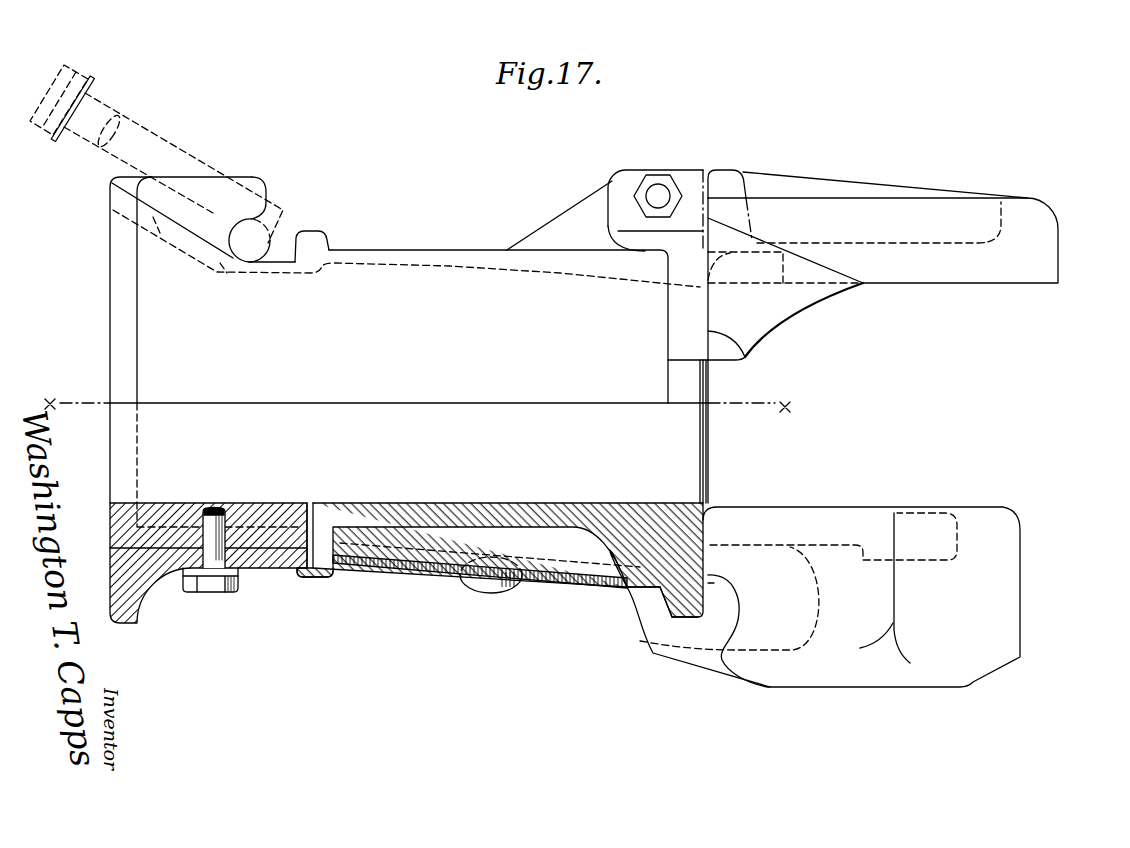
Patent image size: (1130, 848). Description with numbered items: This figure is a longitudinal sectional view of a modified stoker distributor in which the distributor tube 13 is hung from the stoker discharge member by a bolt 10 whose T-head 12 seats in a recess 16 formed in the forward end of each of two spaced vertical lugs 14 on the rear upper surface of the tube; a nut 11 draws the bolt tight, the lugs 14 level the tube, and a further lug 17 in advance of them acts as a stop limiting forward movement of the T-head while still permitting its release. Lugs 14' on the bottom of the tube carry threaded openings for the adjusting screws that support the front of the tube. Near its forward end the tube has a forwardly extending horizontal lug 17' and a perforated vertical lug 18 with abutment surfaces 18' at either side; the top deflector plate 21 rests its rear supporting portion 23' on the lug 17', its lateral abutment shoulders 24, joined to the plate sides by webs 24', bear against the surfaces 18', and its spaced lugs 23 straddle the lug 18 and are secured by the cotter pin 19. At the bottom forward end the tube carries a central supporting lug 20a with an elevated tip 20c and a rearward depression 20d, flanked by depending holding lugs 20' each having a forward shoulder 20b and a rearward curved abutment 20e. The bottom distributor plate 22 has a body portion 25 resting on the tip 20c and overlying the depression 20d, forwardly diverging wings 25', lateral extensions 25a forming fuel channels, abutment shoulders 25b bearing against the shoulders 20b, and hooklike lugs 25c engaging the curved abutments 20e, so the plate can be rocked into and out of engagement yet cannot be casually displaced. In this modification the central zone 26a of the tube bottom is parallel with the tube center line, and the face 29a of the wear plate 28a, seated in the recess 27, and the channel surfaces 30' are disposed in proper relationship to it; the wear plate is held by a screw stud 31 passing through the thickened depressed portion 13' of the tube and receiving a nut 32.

The bolt 10 is at (162, 148).
The nut 11 is at (73, 83).
The T-head 12 is at (250, 240).
The distributor tube 13 is at (405, 352).
The lugs 14 is at (267, 186).
The recess 16 is at (233, 235).
The lug 17 is at (330, 233).
The vertically extending lug 18 is at (707, 187).
The cotter pin 19 is at (656, 194).
The top deflector plate 21 is at (883, 260).
The bottom distributor plate 22 is at (884, 573).
The vertical lugs 23 is at (605, 201).
The lateral abutment shoulders 24 is at (785, 329).
The rear supporting portion 23' is at (640, 292).
The strengthening webs 24' is at (642, 252).
The horizontal lug 17' is at (784, 296).
The abutment surfaces 18' is at (684, 405).
The body portion 25 is at (861, 583).
The distributing wings 25' is at (854, 526).
The lateral extensions 25a is at (833, 663).
The abutment shoulders 25b is at (710, 600).
The hooklike supporting lugs 25c is at (647, 597).
The central supporting lug 20a is at (820, 605).
The shoulder 20b is at (710, 582).
The elevated tip 20c is at (800, 547).
The depression 20d is at (723, 560).
The curved abutment 20e is at (663, 608).
The holding lug 20' is at (664, 650).
The central zone 26a is at (420, 505).
The recess 27 is at (273, 558).
The wear plate 28a is at (289, 520).
The face of plate 29a is at (252, 503).
The channels 30' is at (486, 576).
The screw stud 31 is at (210, 562).
The nut 32 is at (192, 575).
The depressed portion 13' is at (323, 588).
The lugs 14' is at (487, 587).